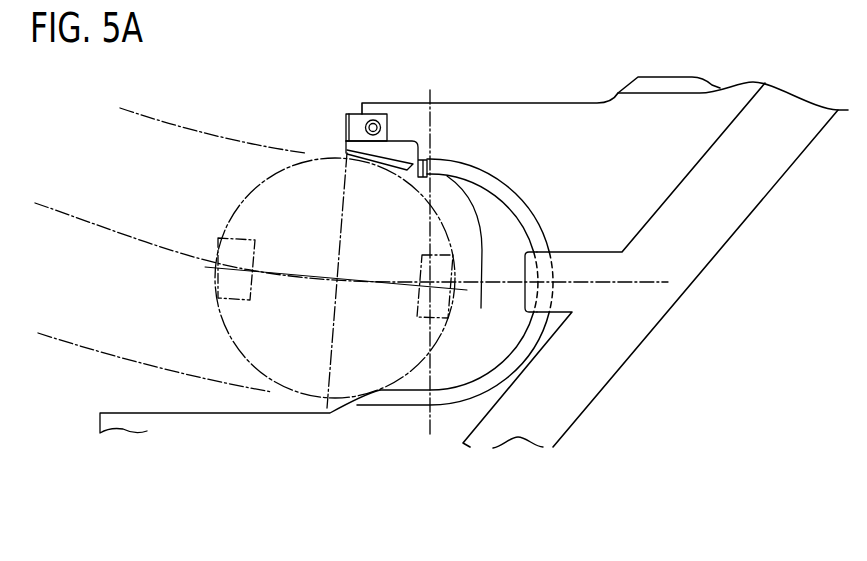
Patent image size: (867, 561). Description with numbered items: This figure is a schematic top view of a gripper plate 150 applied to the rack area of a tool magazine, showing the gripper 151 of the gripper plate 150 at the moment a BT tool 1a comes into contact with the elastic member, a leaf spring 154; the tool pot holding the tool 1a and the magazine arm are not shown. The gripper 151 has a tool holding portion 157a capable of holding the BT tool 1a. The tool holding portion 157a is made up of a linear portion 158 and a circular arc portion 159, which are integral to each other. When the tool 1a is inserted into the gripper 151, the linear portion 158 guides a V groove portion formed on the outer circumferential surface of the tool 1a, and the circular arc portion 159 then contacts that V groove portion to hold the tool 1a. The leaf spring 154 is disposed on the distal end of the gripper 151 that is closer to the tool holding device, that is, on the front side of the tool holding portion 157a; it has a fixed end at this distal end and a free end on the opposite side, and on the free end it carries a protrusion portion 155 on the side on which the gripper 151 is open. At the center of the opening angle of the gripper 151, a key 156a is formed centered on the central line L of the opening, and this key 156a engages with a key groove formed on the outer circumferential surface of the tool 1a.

The gripper plate 150 is at (633, 130).
The gripper 151 is at (224, 178).
The BT tool 1a is at (265, 208).
The elastic member (leaf spring) 154 is at (346, 153).
The protrusion portion 155 is at (407, 168).
The key 156a is at (563, 295).
The tool holding portion 157a is at (460, 393).
The linear portion 158 is at (410, 396).
The circular arc portion 159 is at (527, 225).
The central line L is at (657, 282).